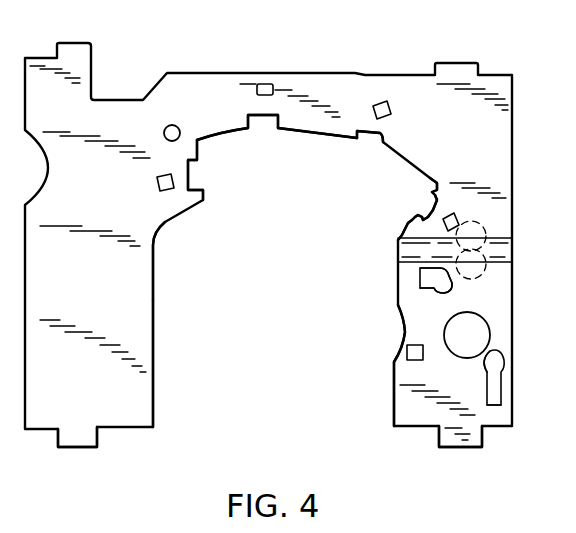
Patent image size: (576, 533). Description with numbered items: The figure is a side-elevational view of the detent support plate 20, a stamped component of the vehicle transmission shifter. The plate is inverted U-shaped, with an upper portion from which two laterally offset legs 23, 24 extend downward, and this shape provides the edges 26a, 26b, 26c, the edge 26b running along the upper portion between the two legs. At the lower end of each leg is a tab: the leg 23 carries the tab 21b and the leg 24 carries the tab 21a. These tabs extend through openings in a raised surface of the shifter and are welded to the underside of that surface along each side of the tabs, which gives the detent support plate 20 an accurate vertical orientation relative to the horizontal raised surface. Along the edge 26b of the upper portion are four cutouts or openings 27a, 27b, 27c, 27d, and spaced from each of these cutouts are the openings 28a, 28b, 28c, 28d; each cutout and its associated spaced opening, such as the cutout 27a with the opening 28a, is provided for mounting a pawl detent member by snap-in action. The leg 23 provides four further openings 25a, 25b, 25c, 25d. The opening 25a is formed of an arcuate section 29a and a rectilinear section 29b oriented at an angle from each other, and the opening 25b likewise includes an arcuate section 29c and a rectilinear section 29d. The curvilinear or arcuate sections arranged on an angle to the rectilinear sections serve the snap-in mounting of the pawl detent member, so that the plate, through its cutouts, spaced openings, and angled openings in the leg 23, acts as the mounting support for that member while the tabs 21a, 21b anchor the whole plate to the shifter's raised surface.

The detent support plate 20 is at (352, 50).
The tab 21a is at (73, 443).
The tab 21b is at (471, 440).
The leg 23 is at (395, 385).
The leg 24 is at (153, 392).
The opening 25a is at (452, 290).
The opening 25b is at (499, 383).
The opening 25c is at (407, 360).
The opening 25d is at (492, 335).
The edge 26a is at (153, 328).
The edge 26b is at (327, 137).
The edge 26c is at (398, 305).
The cutout 27a is at (196, 172).
The cutout 27b is at (260, 122).
The cutout 27c is at (370, 140).
The cutout 27d is at (425, 208).
The opening 28a is at (162, 191).
The opening 28b is at (272, 87).
The opening 28c is at (389, 106).
The opening 28d is at (459, 219).
The arcuate section 29a is at (420, 288).
The rectilinear section 29b is at (420, 270).
The arcuate section 29c is at (500, 368).
The rectilinear section 29d is at (500, 405).